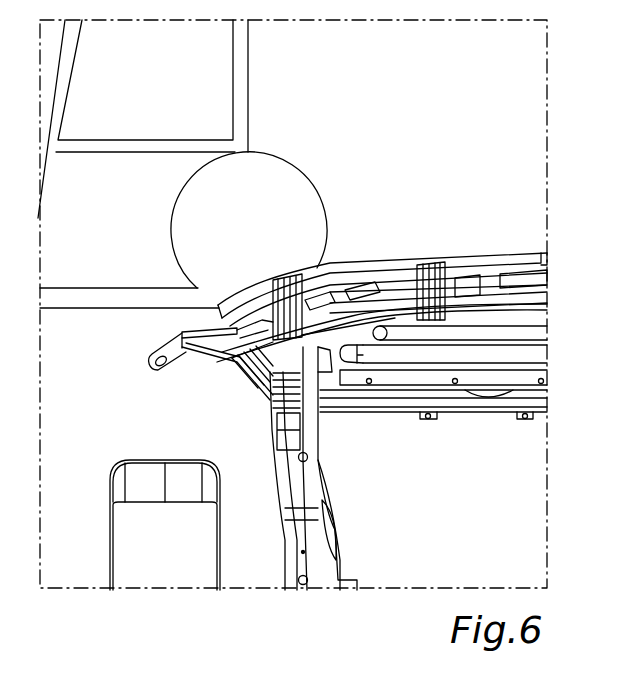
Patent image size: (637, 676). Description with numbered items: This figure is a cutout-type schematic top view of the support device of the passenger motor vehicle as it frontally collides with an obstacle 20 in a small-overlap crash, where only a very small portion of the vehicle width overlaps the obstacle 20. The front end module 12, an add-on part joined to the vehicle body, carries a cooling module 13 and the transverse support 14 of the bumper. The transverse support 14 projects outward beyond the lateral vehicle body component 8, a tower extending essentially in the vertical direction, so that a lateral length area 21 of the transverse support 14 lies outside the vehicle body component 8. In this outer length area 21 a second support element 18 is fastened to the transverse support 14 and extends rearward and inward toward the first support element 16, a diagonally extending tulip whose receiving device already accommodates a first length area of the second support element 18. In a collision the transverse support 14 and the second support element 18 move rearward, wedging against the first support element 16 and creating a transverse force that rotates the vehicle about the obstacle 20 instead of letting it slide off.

The vehicle body component 8 is at (288, 362).
The front end module 12 is at (487, 249).
The cooling module 13 is at (495, 373).
The transverse support 14 is at (352, 322).
The first support element 16 is at (270, 384).
The second support element 18 is at (235, 373).
The obstacle 20 is at (237, 78).
The lateral length area 21 is at (243, 333).